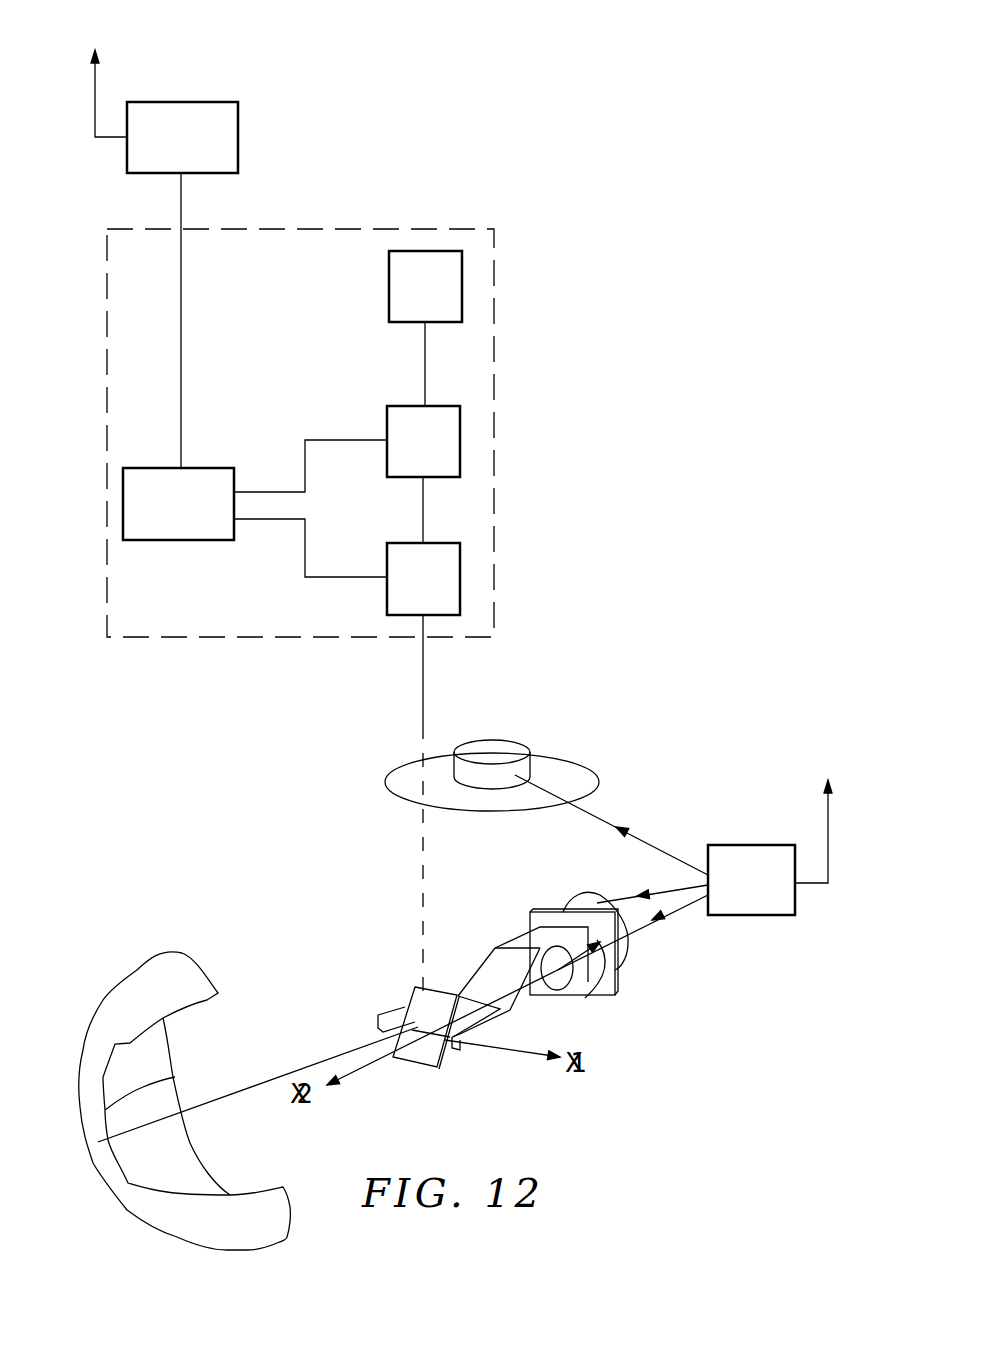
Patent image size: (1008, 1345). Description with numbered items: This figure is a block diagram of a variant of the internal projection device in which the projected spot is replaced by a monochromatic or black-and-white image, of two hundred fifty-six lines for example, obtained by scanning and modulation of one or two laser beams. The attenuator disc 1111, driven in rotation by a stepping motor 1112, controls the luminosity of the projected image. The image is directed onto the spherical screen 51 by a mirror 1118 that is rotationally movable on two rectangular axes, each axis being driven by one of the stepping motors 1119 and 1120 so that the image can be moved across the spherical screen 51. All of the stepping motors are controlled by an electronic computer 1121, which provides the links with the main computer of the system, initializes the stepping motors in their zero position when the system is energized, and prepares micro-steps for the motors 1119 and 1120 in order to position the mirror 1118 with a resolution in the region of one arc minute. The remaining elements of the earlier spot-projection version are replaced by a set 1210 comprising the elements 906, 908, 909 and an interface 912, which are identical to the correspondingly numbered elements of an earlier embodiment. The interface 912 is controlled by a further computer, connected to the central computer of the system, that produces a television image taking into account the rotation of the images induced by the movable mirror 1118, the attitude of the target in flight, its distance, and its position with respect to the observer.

The stepping motor 1120 is at (228, 132).
The set 1210 is at (370, 228).
The element of set 1210 906 is at (455, 290).
The element of set 1210 908 is at (460, 438).
The element of set 1210 909 is at (460, 578).
The interface 912 is at (137, 500).
The attenuator disc 1111 is at (585, 782).
The stepping motor 1112 is at (523, 768).
The electronic computer 1121 is at (758, 850).
The stepping motor 1119 is at (558, 985).
The mirror 1118 is at (427, 1000).
The spherical screen 51 is at (128, 973).